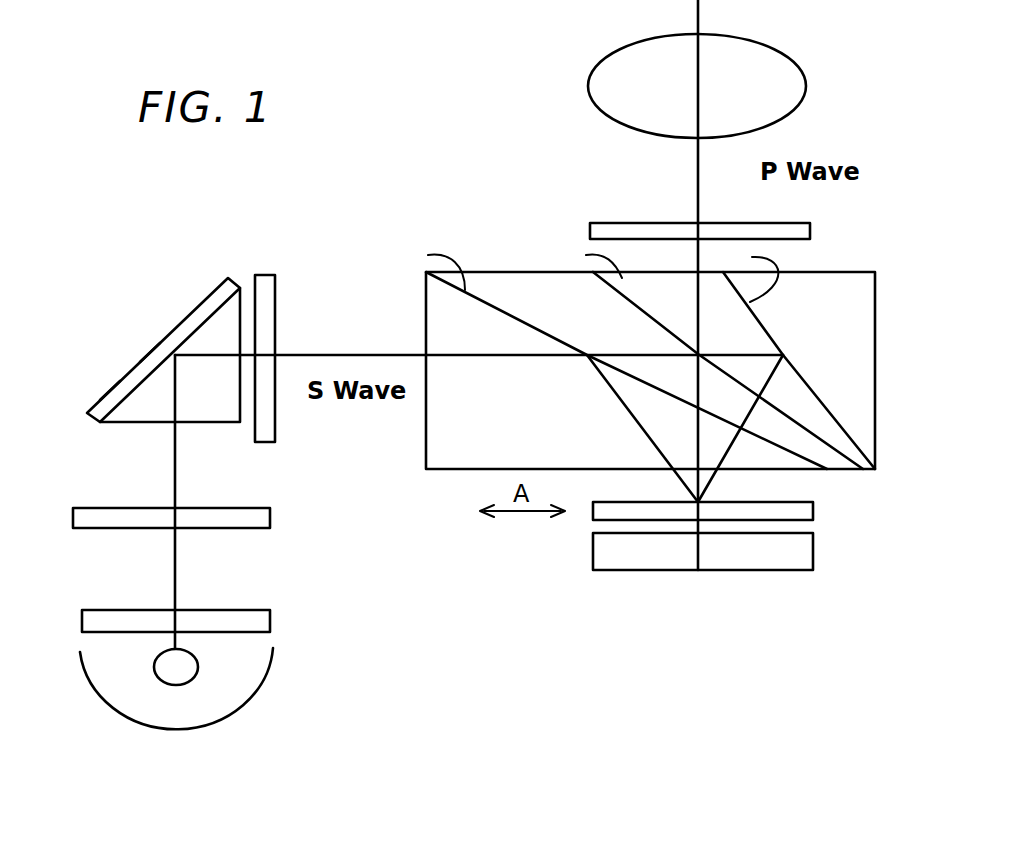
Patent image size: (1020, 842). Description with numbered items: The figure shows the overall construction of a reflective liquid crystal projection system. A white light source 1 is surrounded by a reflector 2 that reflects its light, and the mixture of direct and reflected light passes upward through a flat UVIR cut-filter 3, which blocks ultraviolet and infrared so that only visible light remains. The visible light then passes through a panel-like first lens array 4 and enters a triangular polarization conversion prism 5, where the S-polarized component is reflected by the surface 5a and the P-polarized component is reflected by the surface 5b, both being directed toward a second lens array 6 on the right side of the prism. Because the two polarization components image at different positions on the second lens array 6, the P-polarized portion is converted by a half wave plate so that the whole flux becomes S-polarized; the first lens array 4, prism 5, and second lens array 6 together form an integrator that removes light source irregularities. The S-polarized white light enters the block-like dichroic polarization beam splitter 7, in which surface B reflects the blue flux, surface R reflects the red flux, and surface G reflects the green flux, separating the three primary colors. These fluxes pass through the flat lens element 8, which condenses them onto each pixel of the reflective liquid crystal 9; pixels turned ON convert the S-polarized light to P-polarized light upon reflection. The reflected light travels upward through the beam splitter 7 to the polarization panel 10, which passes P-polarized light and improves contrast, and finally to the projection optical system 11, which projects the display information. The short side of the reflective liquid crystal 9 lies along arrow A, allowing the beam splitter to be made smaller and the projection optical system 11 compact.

The white light source 1 is at (198, 667).
The reflector 2 is at (245, 718).
The UVIR cut-filter 3 is at (270, 620).
The first lens array 4 is at (270, 518).
The polarization conversion prism 5 is at (183, 315).
The surface 5a is at (117, 393).
The surface 5b is at (145, 357).
The second lens array 6 is at (268, 275).
The dichroic polarization beam splitter 7 is at (426, 320).
The flat lens element 8 is at (813, 510).
The reflective liquid crystal 9 is at (813, 565).
The polarization panel 10 is at (612, 223).
The projection optical system 11 is at (605, 87).